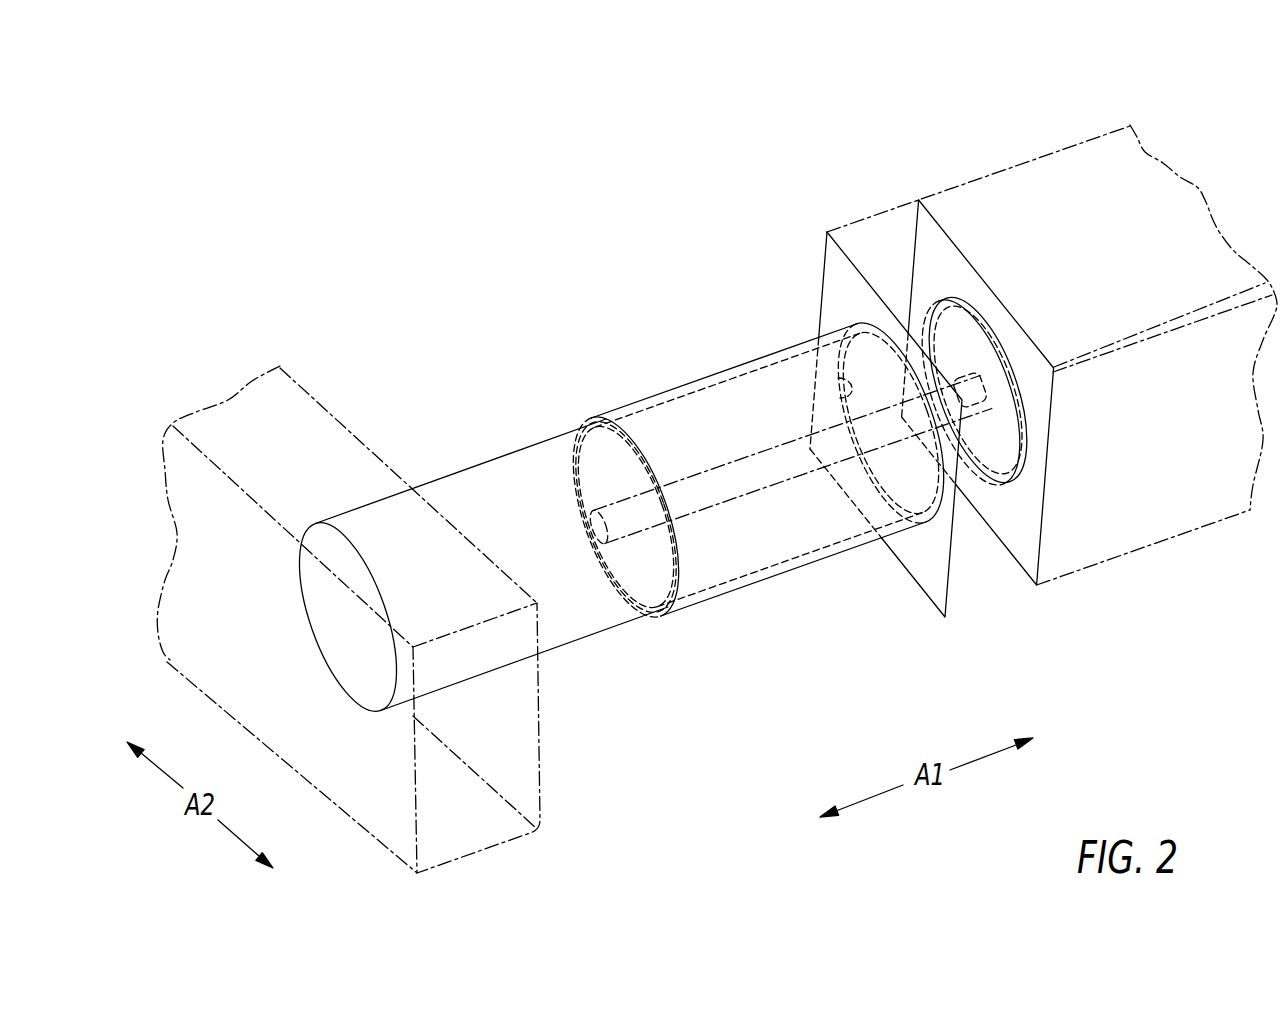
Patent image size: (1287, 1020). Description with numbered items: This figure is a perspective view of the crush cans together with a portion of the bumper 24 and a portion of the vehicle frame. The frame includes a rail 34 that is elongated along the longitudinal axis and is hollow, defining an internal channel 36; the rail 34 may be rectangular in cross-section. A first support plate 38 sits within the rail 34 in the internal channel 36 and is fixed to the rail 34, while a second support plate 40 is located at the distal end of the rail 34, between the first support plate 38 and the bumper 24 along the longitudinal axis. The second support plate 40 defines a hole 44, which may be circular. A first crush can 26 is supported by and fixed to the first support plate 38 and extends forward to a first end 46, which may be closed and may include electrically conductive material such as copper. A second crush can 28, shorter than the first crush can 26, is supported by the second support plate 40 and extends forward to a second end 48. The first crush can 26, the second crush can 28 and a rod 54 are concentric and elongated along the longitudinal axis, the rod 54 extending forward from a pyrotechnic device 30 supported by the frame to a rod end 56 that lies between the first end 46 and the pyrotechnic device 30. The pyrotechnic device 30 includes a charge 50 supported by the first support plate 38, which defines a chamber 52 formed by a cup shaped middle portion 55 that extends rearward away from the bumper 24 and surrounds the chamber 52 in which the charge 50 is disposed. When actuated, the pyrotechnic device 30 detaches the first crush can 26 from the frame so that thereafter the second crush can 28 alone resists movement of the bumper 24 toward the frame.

The bumper 24 is at (330, 407).
The first crush can 26 is at (473, 585).
The second crush can 28 is at (759, 518).
The pyrotechnic device 30 is at (1002, 375).
The rail 34 is at (1060, 173).
The internal channel 36 is at (972, 573).
The first support plate 38 is at (913, 223).
The second support plate 40 is at (823, 263).
The hole 44 is at (754, 413).
The first end 46 is at (313, 527).
The second end 48 is at (661, 620).
The charge 50 is at (1003, 427).
The chamber 52 is at (995, 452).
The rod 54 is at (709, 468).
The cup shaped middle portion 55 is at (1018, 458).
The rod end 56 is at (620, 517).